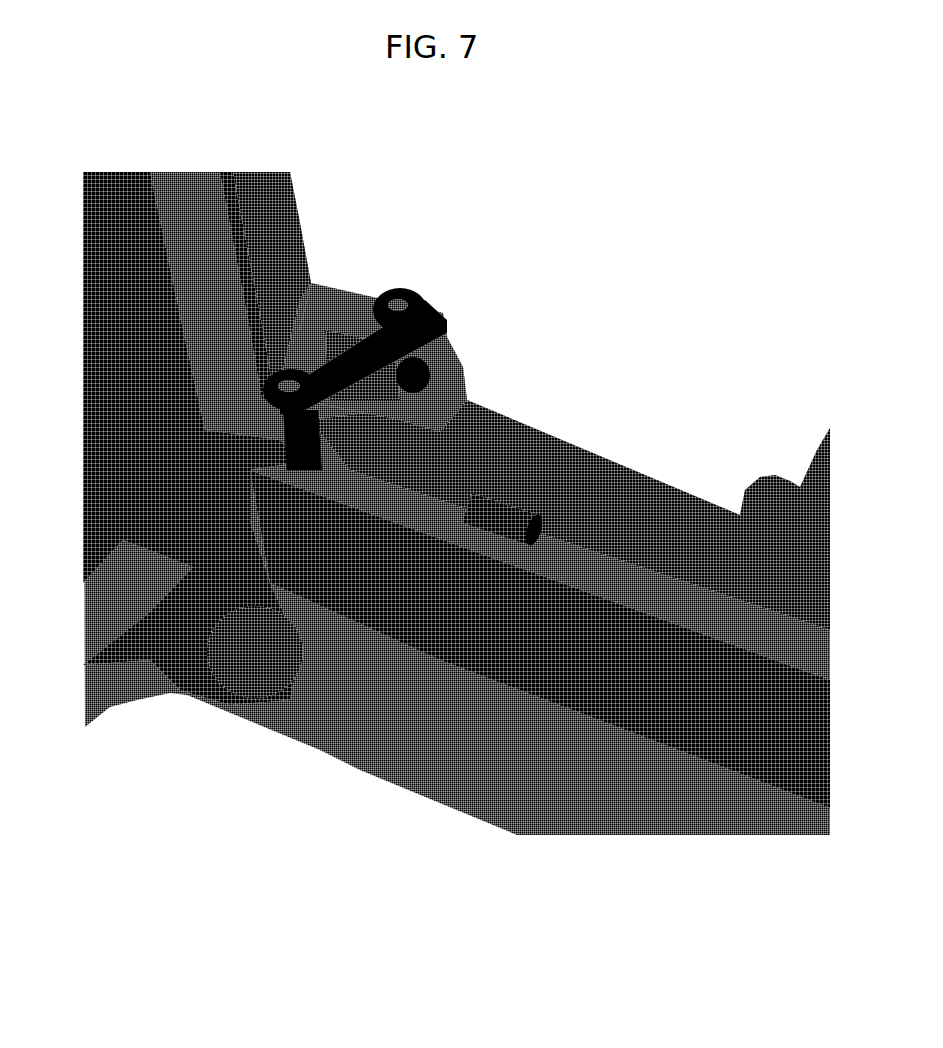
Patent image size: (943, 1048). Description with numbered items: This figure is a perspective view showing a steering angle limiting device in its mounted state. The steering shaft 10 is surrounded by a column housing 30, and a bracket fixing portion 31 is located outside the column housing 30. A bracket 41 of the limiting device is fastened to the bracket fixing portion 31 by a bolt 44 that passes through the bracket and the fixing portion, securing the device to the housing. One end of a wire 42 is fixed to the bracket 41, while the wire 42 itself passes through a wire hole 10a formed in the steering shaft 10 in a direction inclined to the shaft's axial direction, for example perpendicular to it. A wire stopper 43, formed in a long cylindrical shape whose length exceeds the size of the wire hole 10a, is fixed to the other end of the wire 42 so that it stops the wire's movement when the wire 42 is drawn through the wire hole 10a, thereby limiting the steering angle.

The steering shaft 10 is at (367, 602).
The wire hole 10a is at (435, 620).
The column housing 30 is at (268, 735).
The bracket fixing portion 31 is at (462, 362).
The bracket 41 is at (354, 338).
The wire 42 is at (440, 432).
The wire stopper 43 is at (573, 478).
The bolt 44 is at (262, 392).